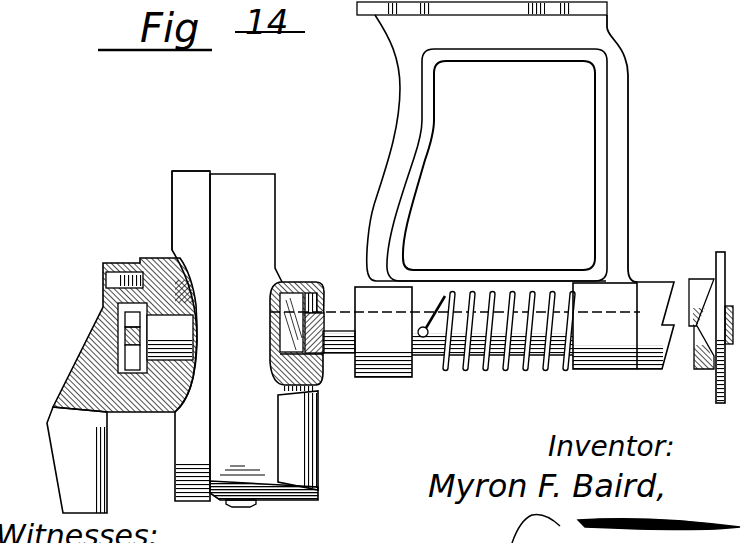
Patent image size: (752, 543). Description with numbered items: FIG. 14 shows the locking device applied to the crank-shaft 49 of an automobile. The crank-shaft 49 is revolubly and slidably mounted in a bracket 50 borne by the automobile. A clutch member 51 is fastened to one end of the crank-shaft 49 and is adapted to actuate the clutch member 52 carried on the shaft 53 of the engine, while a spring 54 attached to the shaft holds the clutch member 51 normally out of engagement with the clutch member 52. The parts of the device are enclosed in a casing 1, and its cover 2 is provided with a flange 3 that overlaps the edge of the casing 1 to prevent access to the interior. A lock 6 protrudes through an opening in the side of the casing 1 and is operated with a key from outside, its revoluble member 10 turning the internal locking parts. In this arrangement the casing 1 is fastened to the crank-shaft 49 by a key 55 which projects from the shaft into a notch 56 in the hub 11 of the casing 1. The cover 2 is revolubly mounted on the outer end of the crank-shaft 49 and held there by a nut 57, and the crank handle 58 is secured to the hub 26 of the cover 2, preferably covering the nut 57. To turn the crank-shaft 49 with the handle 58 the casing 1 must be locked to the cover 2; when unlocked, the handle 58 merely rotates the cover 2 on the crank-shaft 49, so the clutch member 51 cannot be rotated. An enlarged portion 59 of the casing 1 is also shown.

The casing 1 is at (246, 328).
The cover 2 is at (171, 228).
The flange 3 is at (190, 171).
The lock 6 is at (276, 498).
The revoluble member 10 is at (240, 508).
The hub 11 is at (294, 286).
The hub 26 is at (160, 413).
The crank-shaft 49 is at (338, 349).
The bracket 50 is at (497, 142).
The clutch member 51 is at (646, 292).
The clutch member 52 is at (703, 285).
The shaft 53 is at (707, 372).
The spring 54 is at (515, 366).
The key 55 is at (310, 322).
The notch 56 is at (318, 292).
The nut 57 is at (112, 332).
The crank handle 58 is at (77, 460).
The enlarged portion 59 is at (306, 455).